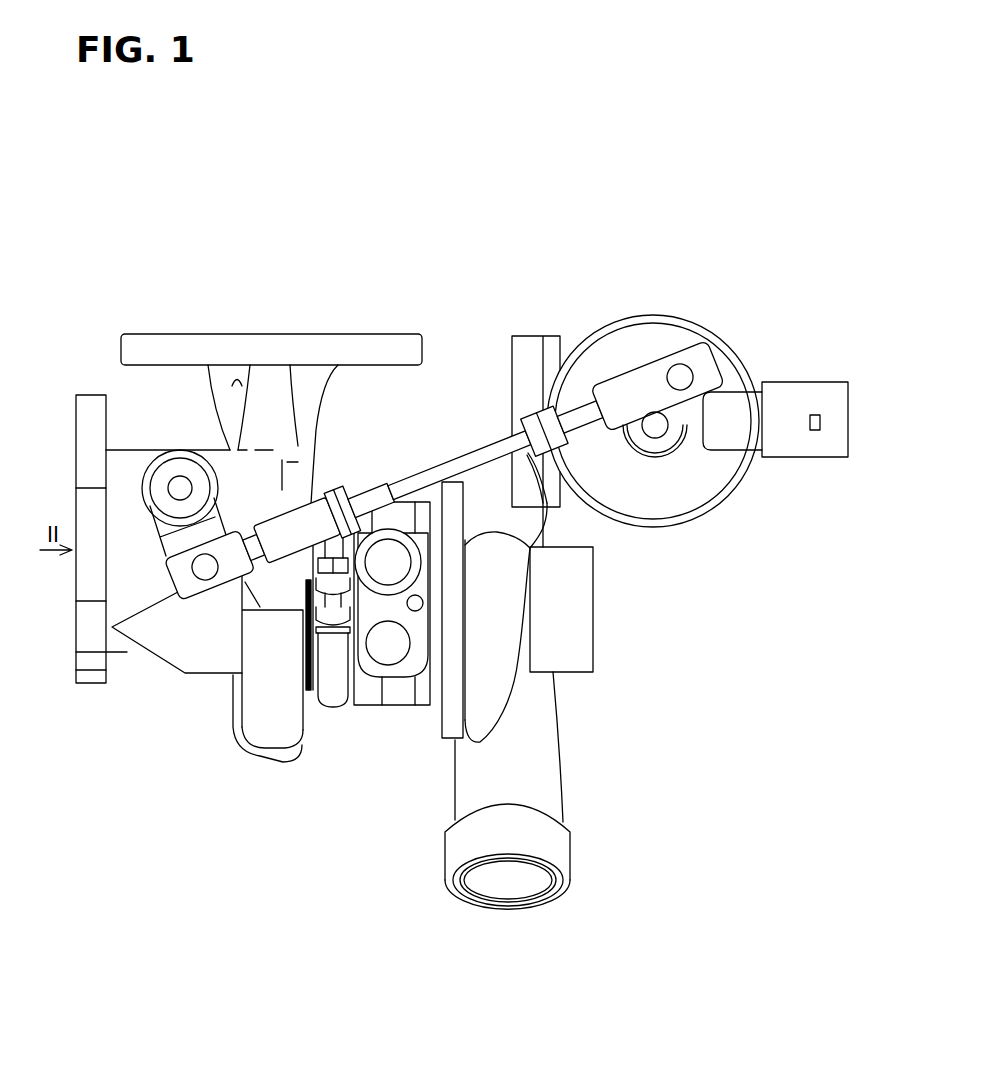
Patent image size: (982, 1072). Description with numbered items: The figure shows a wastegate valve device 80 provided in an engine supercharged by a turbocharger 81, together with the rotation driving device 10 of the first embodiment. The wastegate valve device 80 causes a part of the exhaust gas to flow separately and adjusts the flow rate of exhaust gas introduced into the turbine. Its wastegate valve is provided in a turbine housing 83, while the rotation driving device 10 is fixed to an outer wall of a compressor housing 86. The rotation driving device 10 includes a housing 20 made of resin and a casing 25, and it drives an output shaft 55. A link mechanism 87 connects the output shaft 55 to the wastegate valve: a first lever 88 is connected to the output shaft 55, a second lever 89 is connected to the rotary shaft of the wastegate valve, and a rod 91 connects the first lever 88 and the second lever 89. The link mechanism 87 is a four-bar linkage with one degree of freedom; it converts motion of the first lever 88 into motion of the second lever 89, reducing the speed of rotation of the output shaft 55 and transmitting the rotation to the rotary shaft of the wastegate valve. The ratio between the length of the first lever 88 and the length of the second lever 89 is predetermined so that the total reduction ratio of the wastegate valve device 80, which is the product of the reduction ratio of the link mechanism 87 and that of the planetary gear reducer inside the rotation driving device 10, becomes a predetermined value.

The rotation driving device 10 is at (713, 320).
The housing 20 is at (557, 340).
The casing 25 is at (657, 335).
The output shaft 55 is at (658, 428).
The wastegate valve device 80 is at (543, 447).
The turbocharger 81 is at (158, 318).
The turbine housing 83 is at (125, 470).
The compressor housing 86 is at (492, 672).
The link mechanism 87 is at (712, 360).
The first lever 88 is at (683, 408).
The second lever 89 is at (172, 532).
The rod 91 is at (453, 455).